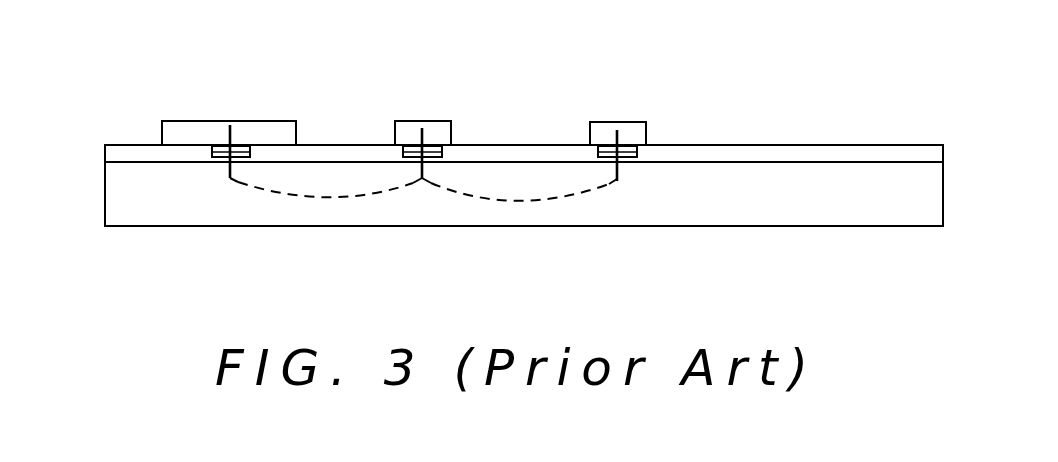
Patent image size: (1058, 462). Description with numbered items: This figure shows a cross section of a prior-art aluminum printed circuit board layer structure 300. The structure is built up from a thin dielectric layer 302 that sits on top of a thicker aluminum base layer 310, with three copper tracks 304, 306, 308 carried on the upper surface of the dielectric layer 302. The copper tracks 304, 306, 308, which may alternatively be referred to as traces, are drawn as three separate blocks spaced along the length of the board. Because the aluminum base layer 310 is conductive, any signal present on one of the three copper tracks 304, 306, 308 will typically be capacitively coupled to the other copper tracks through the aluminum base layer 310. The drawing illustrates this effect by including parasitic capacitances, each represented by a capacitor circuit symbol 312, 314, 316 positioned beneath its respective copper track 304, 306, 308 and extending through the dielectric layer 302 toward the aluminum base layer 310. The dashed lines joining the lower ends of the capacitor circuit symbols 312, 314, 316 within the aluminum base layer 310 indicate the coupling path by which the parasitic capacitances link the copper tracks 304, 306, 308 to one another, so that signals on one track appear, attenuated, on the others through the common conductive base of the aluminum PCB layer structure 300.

The aluminum PCB layer structure 300 is at (499, 193).
The dielectric layer 302 is at (845, 152).
The copper track 304 is at (260, 132).
The copper track 306 is at (438, 132).
The copper track 308 is at (630, 133).
The aluminum base layer 310 is at (873, 215).
The capacitor circuit symbol 312 is at (223, 167).
The capacitor circuit symbol 314 is at (415, 162).
The capacitor circuit symbol 316 is at (613, 162).